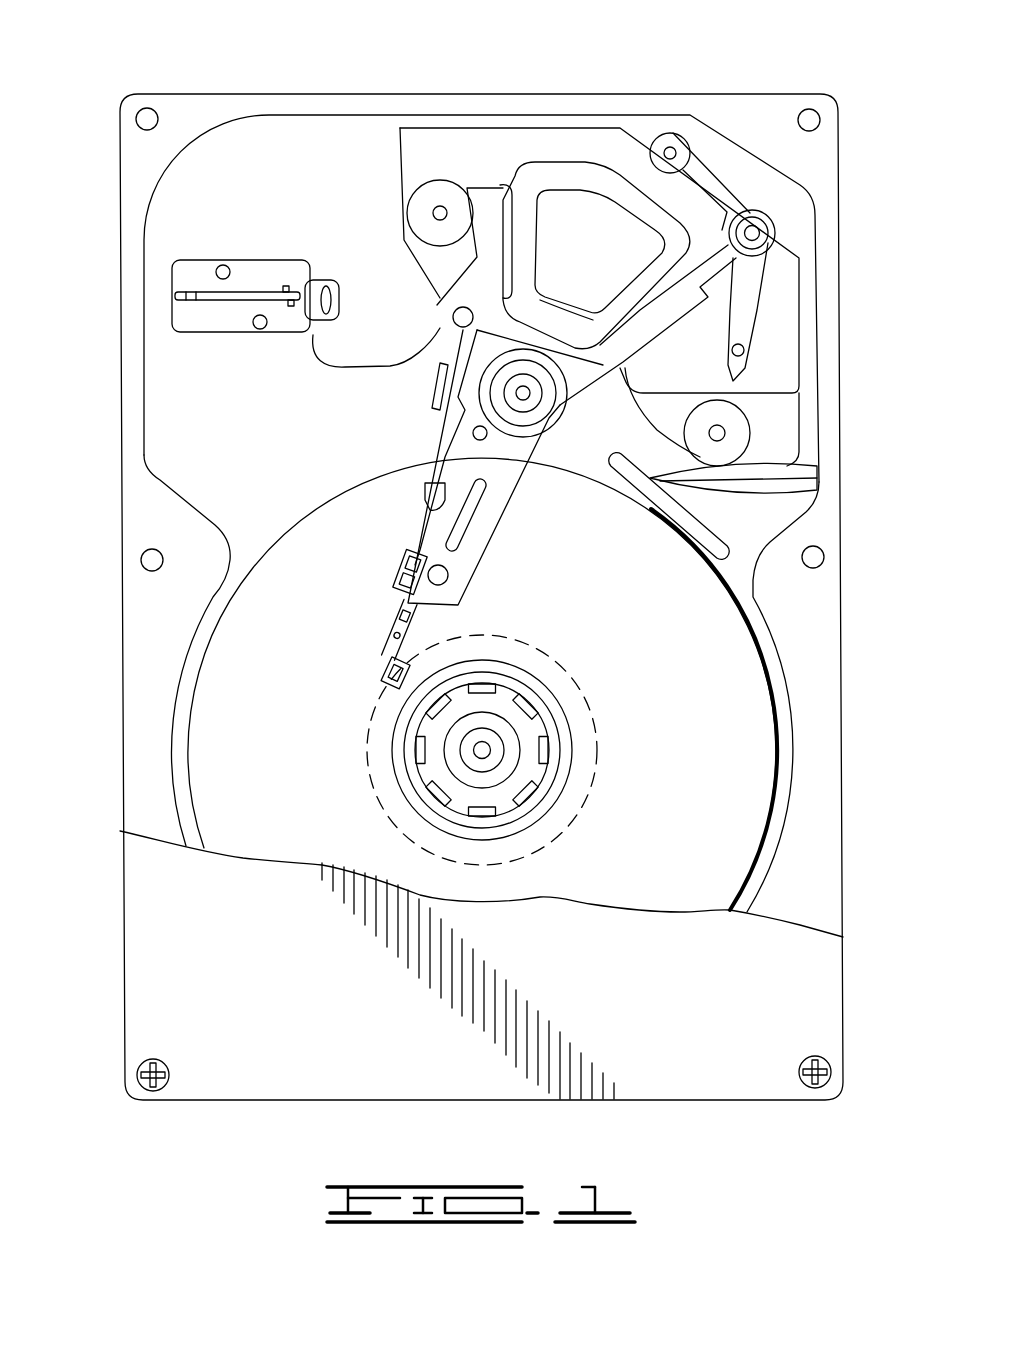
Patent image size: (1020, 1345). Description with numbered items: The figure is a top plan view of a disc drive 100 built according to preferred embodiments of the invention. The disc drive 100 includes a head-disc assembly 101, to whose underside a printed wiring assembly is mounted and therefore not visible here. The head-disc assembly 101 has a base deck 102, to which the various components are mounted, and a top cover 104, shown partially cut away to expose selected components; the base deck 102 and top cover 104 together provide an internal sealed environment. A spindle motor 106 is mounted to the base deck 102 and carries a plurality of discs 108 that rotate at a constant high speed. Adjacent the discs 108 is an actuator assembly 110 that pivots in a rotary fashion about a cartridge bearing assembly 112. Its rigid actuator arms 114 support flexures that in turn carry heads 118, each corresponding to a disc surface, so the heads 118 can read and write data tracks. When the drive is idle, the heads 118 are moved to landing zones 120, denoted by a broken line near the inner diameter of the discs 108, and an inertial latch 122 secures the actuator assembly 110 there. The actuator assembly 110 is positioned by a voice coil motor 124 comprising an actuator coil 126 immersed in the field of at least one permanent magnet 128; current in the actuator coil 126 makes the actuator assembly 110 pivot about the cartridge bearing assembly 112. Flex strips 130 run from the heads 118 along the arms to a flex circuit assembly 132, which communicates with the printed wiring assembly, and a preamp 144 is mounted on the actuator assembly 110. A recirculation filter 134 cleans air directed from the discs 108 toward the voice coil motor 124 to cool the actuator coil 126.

The disc drive 100 is at (225, 55).
The head-disc assembly 101 is at (176, 226).
The base deck 102 is at (178, 405).
The top cover 104 is at (178, 908).
The spindle motor 106 is at (522, 735).
The discs 108 is at (757, 760).
The actuator assembly 110 is at (490, 470).
The cartridge bearing assembly 112 is at (530, 400).
The actuator arms 114 is at (455, 570).
The heads 118 is at (385, 672).
The landing zones 120 is at (583, 838).
The inertial latch 122 is at (752, 283).
The voice coil motor 124 is at (605, 148).
The actuator coil 126 is at (555, 175).
The permanent magnet 128 is at (722, 372).
The flex strips 130 is at (420, 530).
The flex circuit assembly 132 is at (359, 358).
The recirculation filter 134 is at (747, 485).
The preamp/driver circuit 144 is at (437, 400).